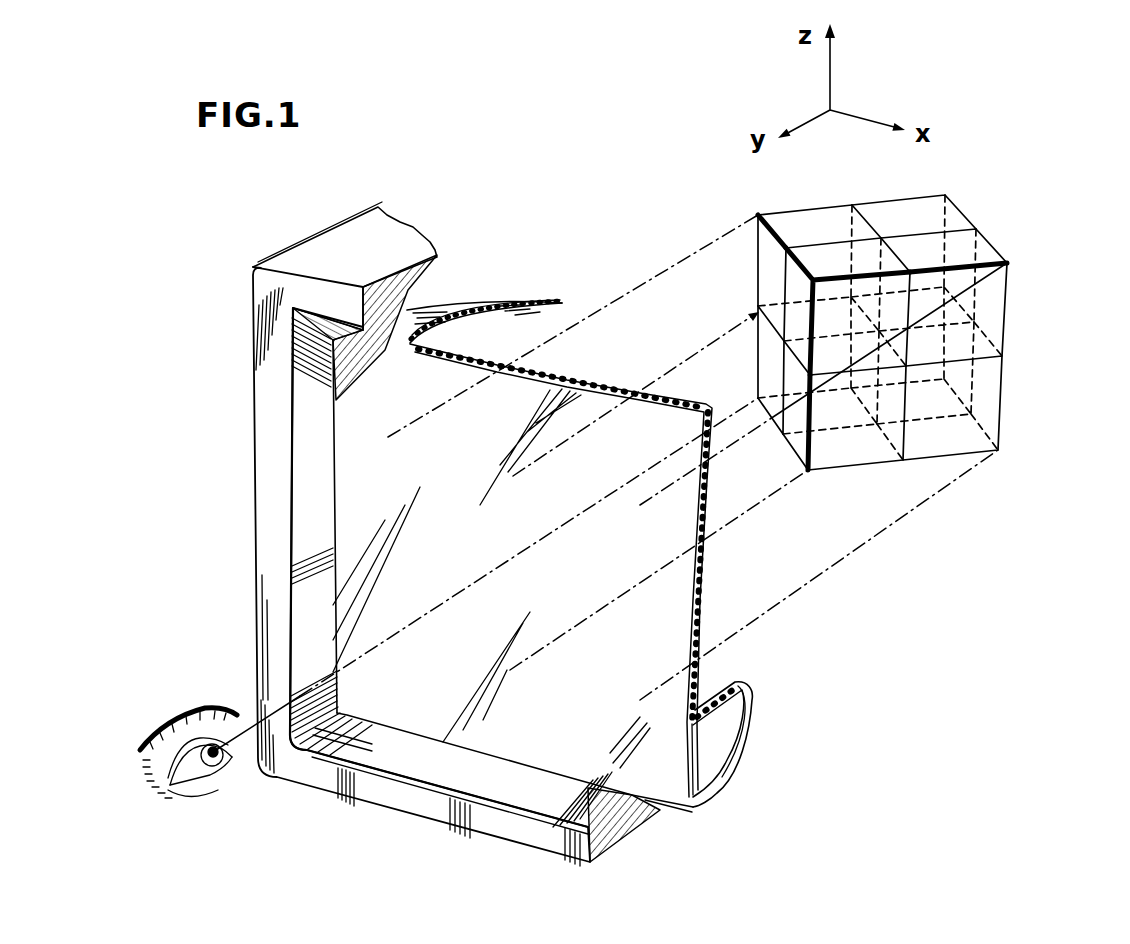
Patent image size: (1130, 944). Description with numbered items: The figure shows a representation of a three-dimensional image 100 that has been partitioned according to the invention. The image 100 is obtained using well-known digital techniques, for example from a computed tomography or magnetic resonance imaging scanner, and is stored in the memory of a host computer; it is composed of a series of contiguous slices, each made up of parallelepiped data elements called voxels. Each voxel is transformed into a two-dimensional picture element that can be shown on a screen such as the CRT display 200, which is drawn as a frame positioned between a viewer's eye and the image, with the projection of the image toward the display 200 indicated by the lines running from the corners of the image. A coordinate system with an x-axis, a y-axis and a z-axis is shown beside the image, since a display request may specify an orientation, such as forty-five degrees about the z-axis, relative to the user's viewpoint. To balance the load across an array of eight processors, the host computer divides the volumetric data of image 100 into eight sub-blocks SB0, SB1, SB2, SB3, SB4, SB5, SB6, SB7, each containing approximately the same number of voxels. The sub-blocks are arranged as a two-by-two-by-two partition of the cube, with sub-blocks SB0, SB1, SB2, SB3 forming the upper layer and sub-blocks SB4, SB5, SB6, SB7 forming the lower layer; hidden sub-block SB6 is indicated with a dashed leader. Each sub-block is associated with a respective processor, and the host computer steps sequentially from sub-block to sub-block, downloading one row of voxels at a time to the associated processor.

The three-dimensional image 100 is at (997, 450).
The CRT display 200 is at (647, 820).
The sub-block SB0 is at (800, 260).
The sub-block SB1 is at (984, 247).
The sub-block SB2 is at (935, 197).
The sub-block SB3 is at (832, 210).
The sub-block SB4 is at (845, 455).
The sub-block SB5 is at (993, 413).
The sub-block SB6 is at (943, 347).
The sub-block SB7 is at (768, 363).